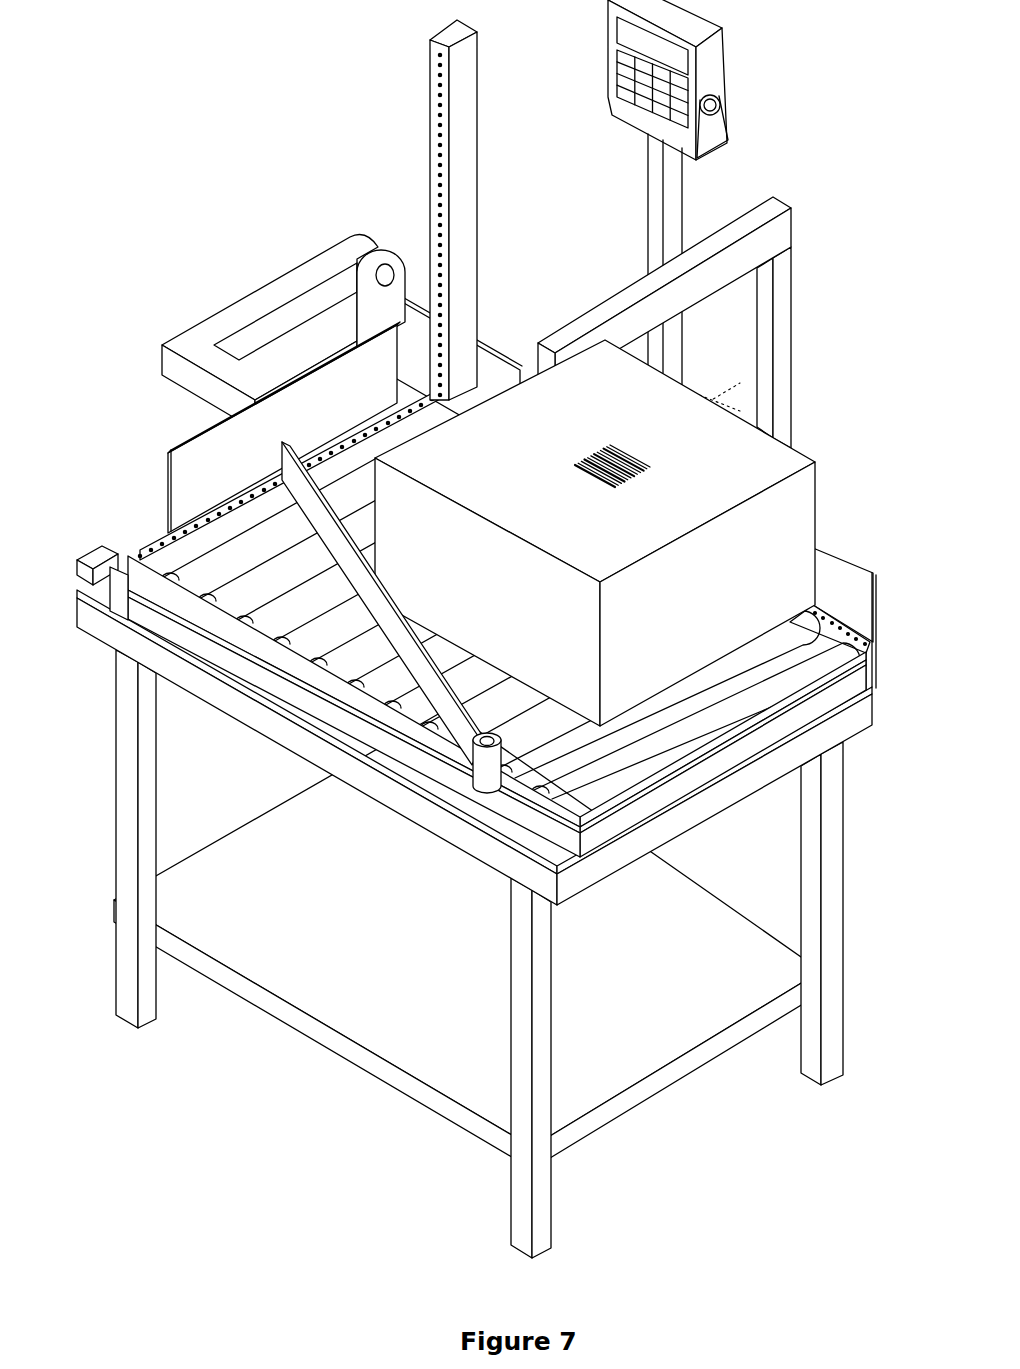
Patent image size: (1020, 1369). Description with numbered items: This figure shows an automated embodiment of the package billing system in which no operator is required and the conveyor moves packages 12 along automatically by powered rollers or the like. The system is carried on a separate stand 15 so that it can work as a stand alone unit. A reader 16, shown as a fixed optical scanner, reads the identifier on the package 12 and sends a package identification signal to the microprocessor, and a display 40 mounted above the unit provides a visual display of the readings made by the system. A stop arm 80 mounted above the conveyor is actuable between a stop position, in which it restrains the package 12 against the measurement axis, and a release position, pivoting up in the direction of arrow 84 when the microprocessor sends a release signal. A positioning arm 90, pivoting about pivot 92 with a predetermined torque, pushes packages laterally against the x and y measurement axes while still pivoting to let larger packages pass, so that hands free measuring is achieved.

The package 12 is at (807, 511).
The stand 15 is at (127, 790).
The reader 16 is at (562, 333).
The display 40 is at (713, 72).
The stop arm 80 is at (178, 371).
The arrow 84 is at (354, 159).
The positioning arm 90 is at (342, 548).
The pivot 92 is at (487, 748).